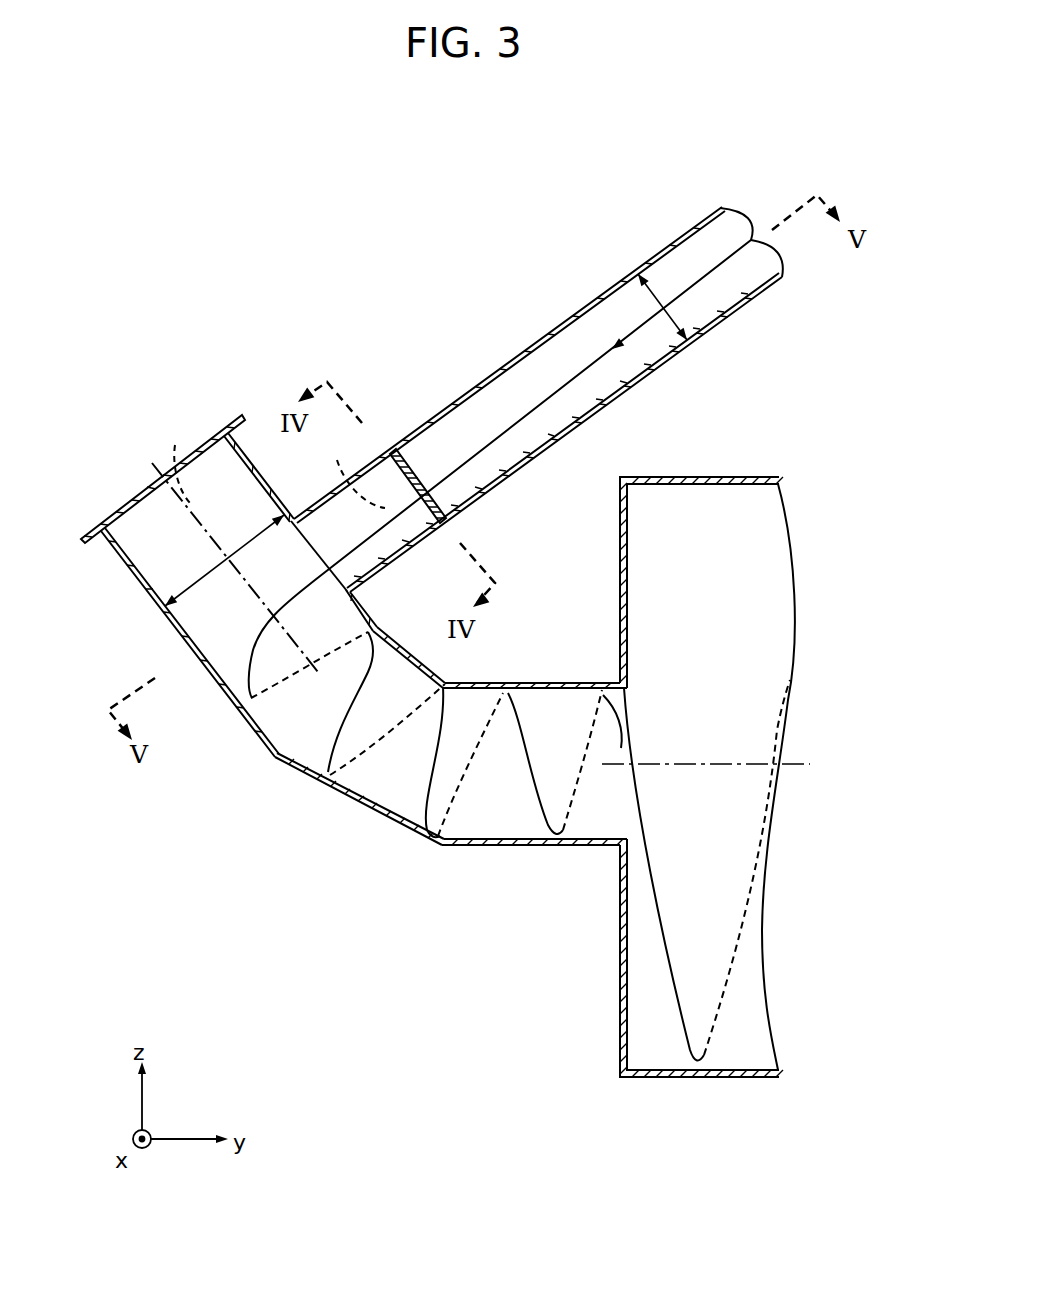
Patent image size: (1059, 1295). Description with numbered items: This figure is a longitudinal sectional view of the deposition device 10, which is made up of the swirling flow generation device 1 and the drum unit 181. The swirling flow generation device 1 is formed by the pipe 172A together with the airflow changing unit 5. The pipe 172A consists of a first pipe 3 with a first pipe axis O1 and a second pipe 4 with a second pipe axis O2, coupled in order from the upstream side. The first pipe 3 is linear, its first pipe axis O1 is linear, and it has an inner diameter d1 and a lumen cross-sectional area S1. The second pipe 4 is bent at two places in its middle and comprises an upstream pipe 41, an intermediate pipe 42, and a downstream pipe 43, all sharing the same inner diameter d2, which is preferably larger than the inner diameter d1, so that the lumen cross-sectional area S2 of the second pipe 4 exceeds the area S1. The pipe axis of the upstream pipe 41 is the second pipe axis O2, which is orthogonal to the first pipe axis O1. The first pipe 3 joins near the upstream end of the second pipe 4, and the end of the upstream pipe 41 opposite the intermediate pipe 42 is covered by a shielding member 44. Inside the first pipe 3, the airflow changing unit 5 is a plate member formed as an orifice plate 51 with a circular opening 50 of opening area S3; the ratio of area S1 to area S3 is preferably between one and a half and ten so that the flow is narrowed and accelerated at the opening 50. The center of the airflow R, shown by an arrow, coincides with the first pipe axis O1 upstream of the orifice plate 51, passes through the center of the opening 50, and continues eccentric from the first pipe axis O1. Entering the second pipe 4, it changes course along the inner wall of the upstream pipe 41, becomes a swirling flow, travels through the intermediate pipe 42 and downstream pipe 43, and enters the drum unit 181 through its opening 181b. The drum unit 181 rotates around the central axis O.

The swirling flow generation device 1 is at (424, 255).
The deposition device 10 is at (512, 175).
The first pipe 3 is at (516, 345).
The pipe 172A is at (690, 228).
The cross-sectional area of the lumen of the first pipe S1 is at (577, 315).
The inner diameter of the first pipe d1 is at (641, 284).
The airflow changing unit 5 is at (401, 448).
The opening 50 is at (415, 475).
The orifice plate 51 is at (449, 514).
The first pipe axis O1 is at (351, 471).
The second pipe axis O2 is at (235, 543).
The shielding member 44 is at (118, 508).
The second pipe 4 is at (122, 581).
The inner diameter of the second pipe d2 is at (170, 607).
The upstream pipe 41 is at (225, 692).
The cross-sectional area of the lumen of the second pipe S2 is at (298, 717).
The intermediate pipe 42 is at (372, 810).
The airflow R is at (532, 762).
The downstream pipe 43 is at (524, 850).
The drum unit 181 is at (738, 476).
The opening 181b is at (604, 707).
The central axis O is at (755, 762).
The opening area of the opening S3 is at (445, 465).